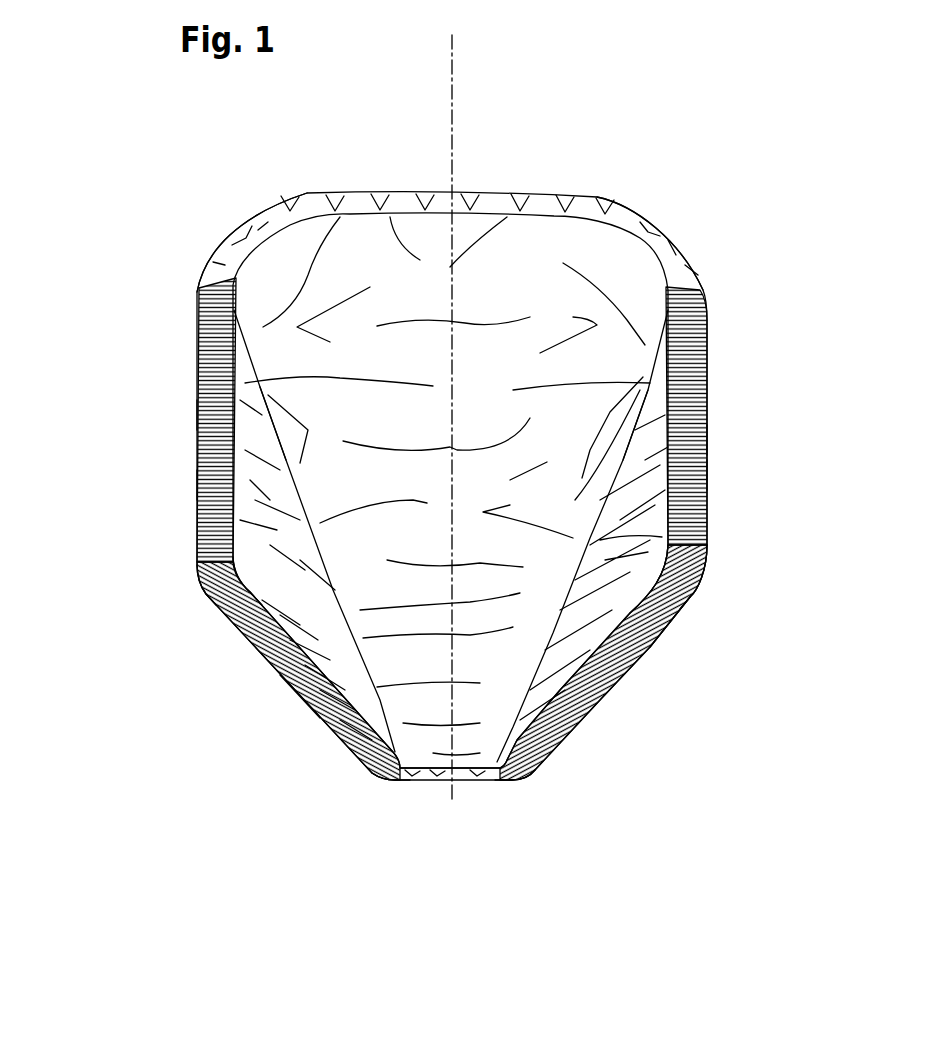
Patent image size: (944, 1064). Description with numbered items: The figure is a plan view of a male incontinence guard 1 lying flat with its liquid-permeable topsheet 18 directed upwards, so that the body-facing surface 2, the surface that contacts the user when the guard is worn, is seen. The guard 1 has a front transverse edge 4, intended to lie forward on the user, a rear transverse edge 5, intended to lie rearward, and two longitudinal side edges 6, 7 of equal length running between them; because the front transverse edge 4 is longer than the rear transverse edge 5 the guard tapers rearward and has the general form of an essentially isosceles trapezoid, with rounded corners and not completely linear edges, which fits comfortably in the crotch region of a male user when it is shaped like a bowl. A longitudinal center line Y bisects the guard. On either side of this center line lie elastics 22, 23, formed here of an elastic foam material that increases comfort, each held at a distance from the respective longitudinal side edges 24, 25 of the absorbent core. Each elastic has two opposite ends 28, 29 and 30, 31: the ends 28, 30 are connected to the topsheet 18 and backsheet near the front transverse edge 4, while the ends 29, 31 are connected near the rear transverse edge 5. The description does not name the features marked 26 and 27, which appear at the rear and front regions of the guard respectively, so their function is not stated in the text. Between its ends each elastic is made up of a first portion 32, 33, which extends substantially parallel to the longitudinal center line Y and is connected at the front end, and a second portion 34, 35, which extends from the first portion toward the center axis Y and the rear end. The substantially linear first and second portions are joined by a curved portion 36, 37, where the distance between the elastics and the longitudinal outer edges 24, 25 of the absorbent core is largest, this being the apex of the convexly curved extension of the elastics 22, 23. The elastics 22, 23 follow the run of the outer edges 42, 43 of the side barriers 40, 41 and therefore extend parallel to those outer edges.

The male incontinence guard 1 is at (133, 544).
The body-facing surface 2 is at (383, 718).
The front transverse edge 4 is at (431, 182).
The rear transverse edge 5 is at (447, 815).
The longitudinal side edge 6 is at (727, 441).
The longitudinal side edge 7 is at (178, 418).
The topsheet 18 is at (550, 258).
The elastic 22 is at (690, 410).
The elastic 23 is at (216, 355).
The longitudinal side edge of the absorbent core 24 is at (652, 386).
The longitudinal side edge of the absorbent core 25 is at (267, 433).
The bottom wall 26 is at (468, 786).
The top wall 27 is at (486, 214).
The end of elastic 28 is at (690, 285).
The end of elastic 29 is at (493, 782).
The end of elastic 30 is at (226, 266).
The end of elastic 31 is at (405, 783).
The first portion 32 is at (690, 472).
The first portion 33 is at (200, 485).
The second portion 34 is at (615, 668).
The second portion 35 is at (300, 668).
The curved portion 36 is at (705, 577).
The curved portion 37 is at (205, 578).
The side barrier 40 is at (670, 540).
The side barrier 41 is at (253, 617).
The outer edge of side barrier 42 is at (670, 628).
The outer edge of side barrier 43 is at (310, 692).
The longitudinal center line Y is at (452, 82).